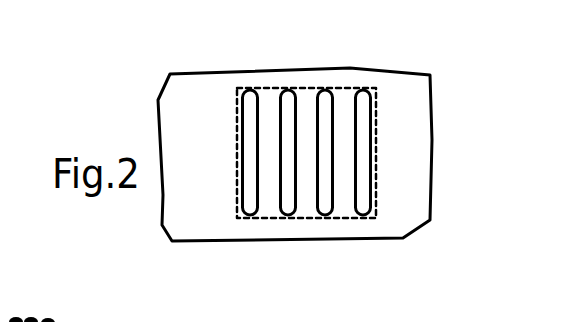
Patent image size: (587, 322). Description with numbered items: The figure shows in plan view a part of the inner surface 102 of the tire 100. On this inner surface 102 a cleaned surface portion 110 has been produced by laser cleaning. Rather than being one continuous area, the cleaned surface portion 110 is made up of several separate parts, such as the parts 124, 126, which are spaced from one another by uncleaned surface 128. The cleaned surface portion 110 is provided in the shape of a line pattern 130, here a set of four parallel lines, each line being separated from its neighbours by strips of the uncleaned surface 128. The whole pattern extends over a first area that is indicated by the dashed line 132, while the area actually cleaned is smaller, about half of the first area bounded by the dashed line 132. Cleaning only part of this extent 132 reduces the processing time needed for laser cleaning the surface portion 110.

The tire 100 is at (157, 50).
The inner surface 102 is at (403, 93).
The cleaned surface portion 110 is at (288, 90).
The first part of cleaned surface portion 124 is at (250, 208).
The second part of cleaned surface portion 126 is at (290, 210).
The uncleaned surface 128 is at (267, 132).
The line pattern 130 is at (443, 115).
The dashed line indicating first area 132 is at (373, 205).